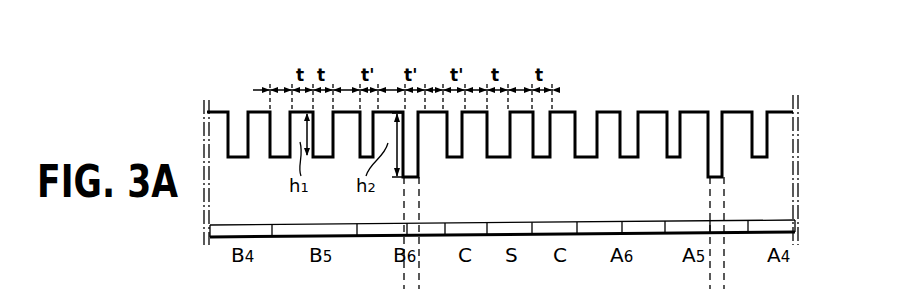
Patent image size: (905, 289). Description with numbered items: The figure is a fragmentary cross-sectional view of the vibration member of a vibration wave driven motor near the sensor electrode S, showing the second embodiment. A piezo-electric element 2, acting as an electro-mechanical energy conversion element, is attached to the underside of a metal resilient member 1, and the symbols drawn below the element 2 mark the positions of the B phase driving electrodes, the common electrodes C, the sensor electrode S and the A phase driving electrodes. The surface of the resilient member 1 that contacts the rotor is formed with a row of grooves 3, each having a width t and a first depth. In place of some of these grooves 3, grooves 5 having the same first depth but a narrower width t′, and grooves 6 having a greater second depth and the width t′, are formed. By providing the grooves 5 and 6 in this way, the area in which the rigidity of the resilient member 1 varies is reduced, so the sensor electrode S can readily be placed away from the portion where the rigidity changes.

The resilient member 1 is at (777, 180).
The piezo-electric element 2 is at (797, 224).
The grooves 3 is at (280, 127).
The grooves 5 is at (367, 120).
The grooves 6 is at (412, 118).